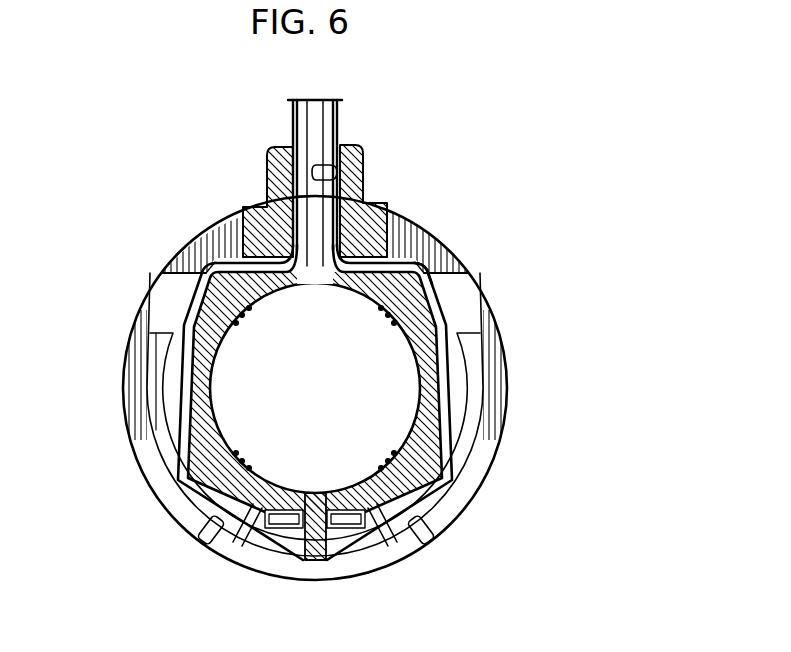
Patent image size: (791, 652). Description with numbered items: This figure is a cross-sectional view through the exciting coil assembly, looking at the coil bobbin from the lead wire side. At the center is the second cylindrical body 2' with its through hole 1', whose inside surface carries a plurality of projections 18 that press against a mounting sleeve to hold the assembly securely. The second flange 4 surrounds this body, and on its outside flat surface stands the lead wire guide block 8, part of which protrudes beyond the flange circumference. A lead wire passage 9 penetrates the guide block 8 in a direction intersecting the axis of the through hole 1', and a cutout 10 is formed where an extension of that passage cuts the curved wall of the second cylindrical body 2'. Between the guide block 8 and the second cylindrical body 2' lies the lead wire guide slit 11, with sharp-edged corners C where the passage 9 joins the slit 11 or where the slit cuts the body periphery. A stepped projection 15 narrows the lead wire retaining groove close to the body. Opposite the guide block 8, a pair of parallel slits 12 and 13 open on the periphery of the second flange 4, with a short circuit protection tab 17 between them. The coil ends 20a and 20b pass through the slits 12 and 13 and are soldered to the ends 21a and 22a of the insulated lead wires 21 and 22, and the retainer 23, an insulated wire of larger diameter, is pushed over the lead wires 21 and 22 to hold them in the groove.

The through hole 1' is at (381, 388).
The second cylindrical body 2' is at (360, 402).
The second flange 4 is at (500, 434).
The lead wire guide block 8 is at (357, 230).
The lead wire passage 9 is at (336, 173).
The cutout 10 is at (292, 286).
The lead wire guide slit 11 is at (405, 261).
The slit 12 is at (200, 540).
The slit 13 is at (437, 543).
The stepped projection 15 is at (174, 332).
The short circuit protection tab 17 is at (318, 560).
The projections 18 is at (383, 316).
The coil end 20a is at (263, 528).
The coil end 20b is at (365, 522).
The lead wire 21 is at (293, 117).
The lead wire end 21a is at (288, 508).
The lead wire 22 is at (337, 113).
The lead wire end 22a is at (329, 508).
The retainer 23 is at (452, 472).
The sharp-edged corners C is at (223, 237).